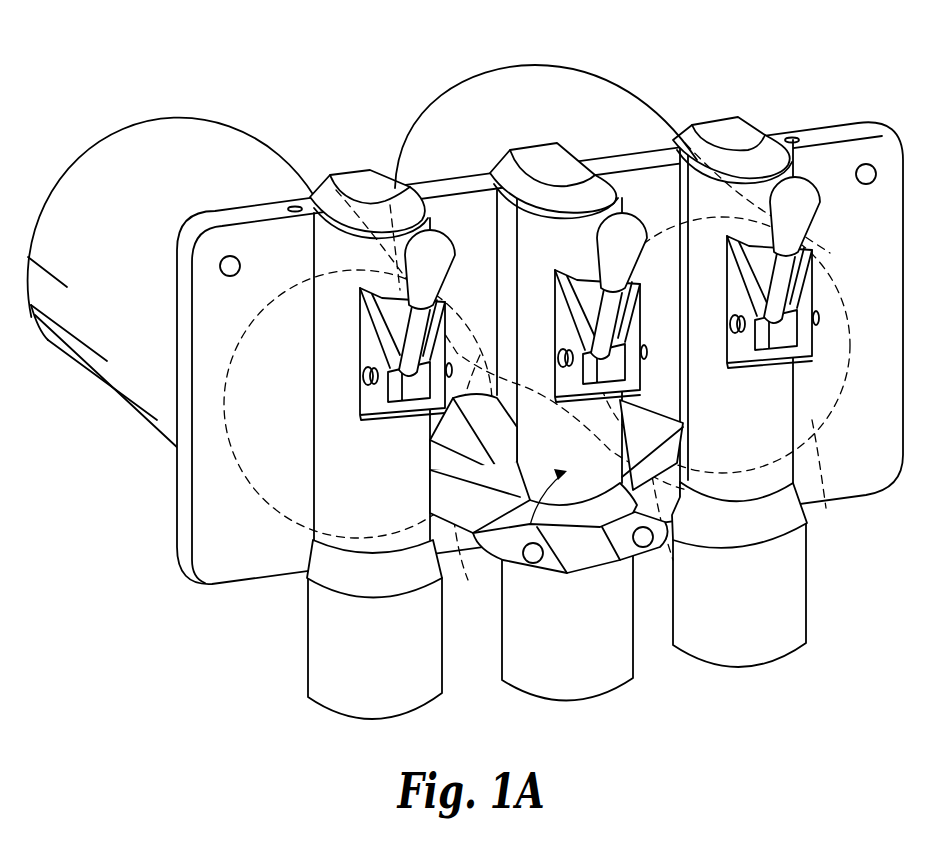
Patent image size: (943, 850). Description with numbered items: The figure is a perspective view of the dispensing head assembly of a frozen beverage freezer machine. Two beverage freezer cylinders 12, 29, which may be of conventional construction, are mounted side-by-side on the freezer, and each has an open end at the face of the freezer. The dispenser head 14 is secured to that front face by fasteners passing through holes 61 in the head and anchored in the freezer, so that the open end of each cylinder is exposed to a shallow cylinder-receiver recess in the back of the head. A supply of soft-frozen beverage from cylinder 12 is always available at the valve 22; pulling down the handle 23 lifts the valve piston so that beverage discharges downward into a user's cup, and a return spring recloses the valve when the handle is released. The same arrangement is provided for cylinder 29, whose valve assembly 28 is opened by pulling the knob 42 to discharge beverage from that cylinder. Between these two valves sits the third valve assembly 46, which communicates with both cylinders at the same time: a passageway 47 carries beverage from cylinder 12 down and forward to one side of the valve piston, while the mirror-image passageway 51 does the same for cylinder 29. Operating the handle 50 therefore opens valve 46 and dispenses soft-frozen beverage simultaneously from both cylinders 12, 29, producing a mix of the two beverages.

The beverage freezer cylinder 12 is at (130, 150).
The dispenser head 14 is at (264, 250).
The valve 22 is at (352, 470).
The handle 23 is at (438, 240).
The valve assembly 28 is at (771, 397).
The beverage freezer cylinder 29 is at (520, 65).
The knob 42 is at (798, 186).
The third valve assembly 46 is at (532, 563).
The passageway 47 is at (482, 538).
The handle 50 is at (625, 222).
The passageway 51 is at (666, 549).
The holes 61 is at (221, 263).